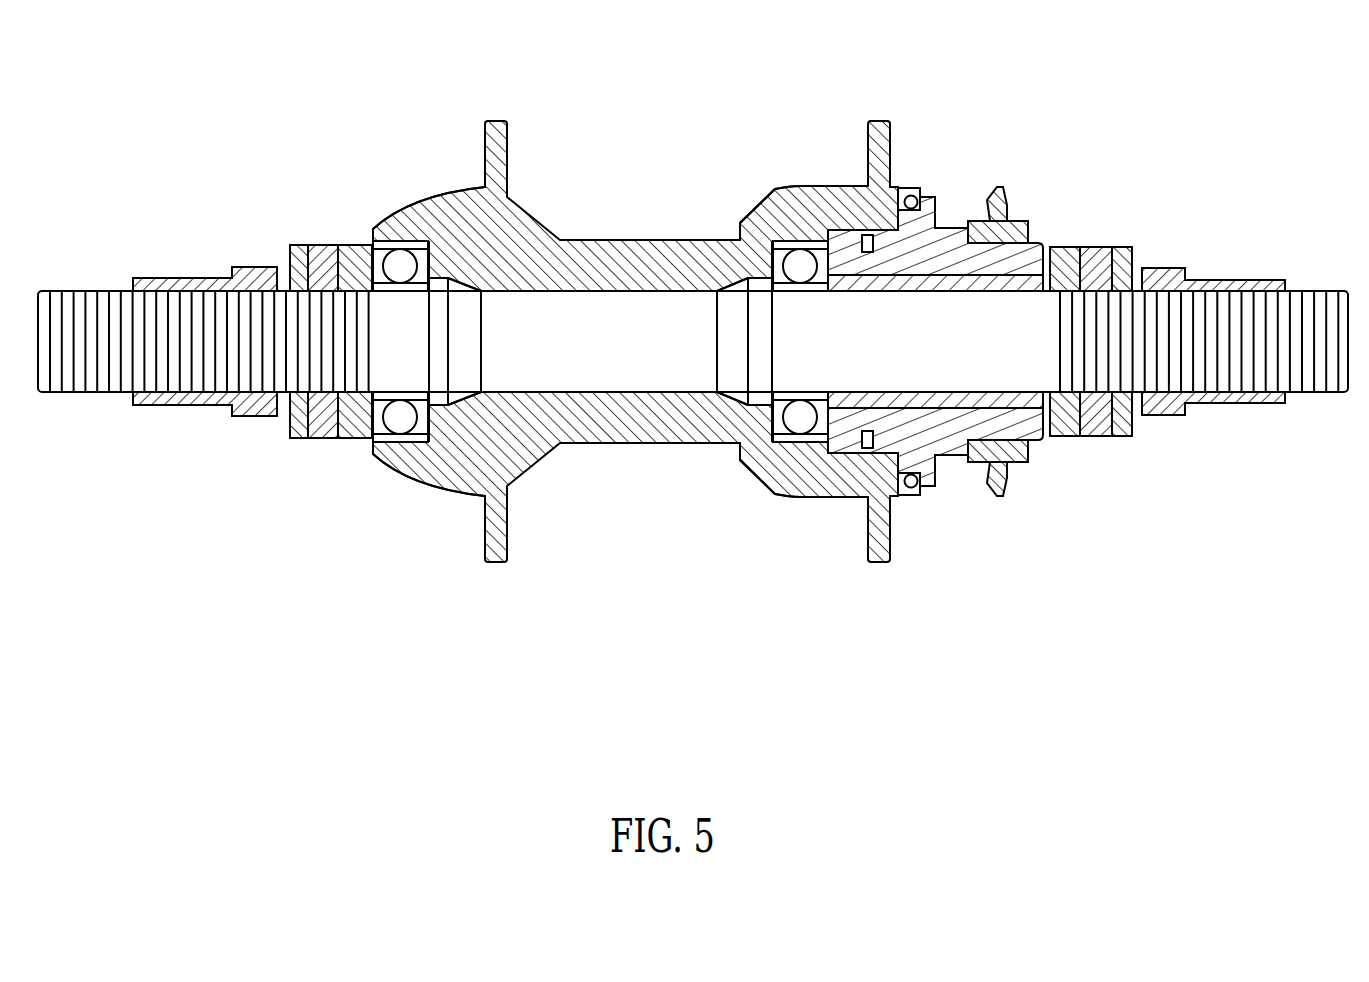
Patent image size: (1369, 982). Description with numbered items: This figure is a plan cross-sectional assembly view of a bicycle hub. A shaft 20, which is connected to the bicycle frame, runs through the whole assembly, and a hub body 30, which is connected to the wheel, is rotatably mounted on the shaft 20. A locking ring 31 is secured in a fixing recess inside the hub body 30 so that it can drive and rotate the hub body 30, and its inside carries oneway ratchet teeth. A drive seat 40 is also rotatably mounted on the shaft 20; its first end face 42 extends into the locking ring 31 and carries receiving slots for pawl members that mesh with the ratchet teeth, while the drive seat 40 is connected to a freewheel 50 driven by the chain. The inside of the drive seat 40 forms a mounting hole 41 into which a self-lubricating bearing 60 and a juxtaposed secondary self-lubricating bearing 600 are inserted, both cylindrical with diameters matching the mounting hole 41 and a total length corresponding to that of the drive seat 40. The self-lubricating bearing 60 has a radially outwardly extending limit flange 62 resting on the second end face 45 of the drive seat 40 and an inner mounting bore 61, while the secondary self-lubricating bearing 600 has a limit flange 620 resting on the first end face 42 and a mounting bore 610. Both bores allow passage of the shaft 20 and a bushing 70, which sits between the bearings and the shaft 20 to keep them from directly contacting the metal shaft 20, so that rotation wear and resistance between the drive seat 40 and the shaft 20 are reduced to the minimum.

The shaft 20 is at (575, 400).
The hub body 30 is at (421, 494).
The locking ring 31 is at (840, 228).
The drive seat 40 is at (955, 462).
The mounting hole 41 is at (1022, 395).
The first end face 42 is at (850, 441).
The second end face 45 is at (1033, 243).
The freewheel 50 is at (1019, 483).
The self-lubricating bearing 60 is at (1003, 250).
The mounting bore 61 is at (1022, 288).
The limit flange 62 is at (1070, 247).
The bushing 70 is at (831, 303).
The secondary self-lubricating bearing 600 is at (883, 230).
The mounting bore 610 is at (863, 387).
The limit flange 620 is at (750, 212).